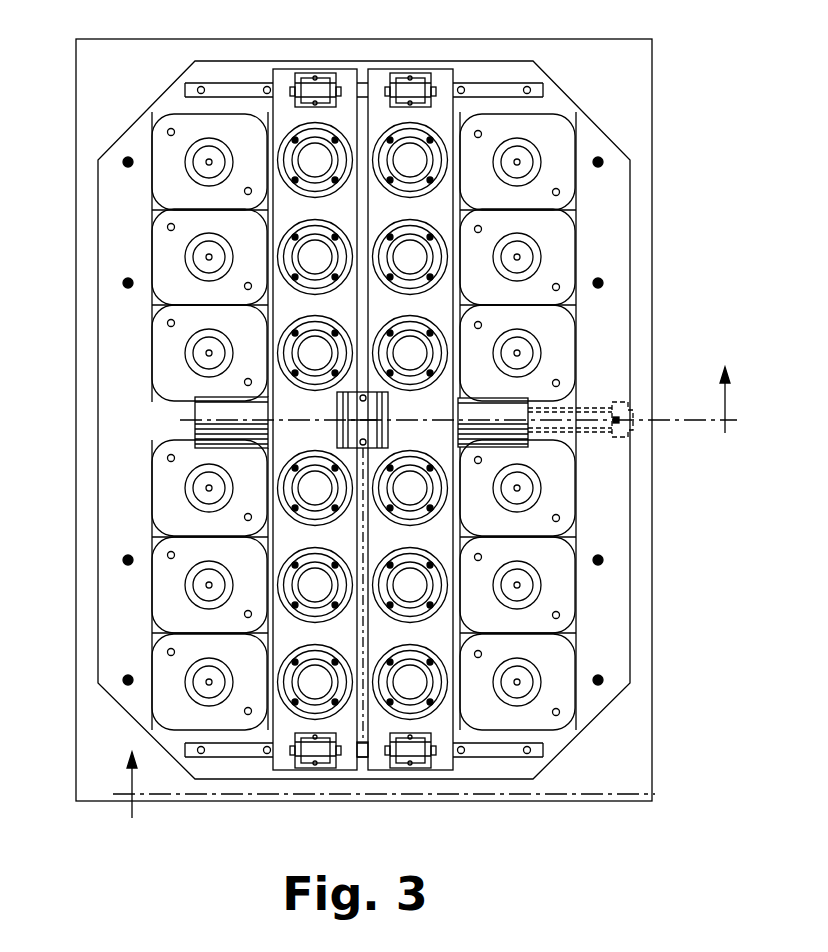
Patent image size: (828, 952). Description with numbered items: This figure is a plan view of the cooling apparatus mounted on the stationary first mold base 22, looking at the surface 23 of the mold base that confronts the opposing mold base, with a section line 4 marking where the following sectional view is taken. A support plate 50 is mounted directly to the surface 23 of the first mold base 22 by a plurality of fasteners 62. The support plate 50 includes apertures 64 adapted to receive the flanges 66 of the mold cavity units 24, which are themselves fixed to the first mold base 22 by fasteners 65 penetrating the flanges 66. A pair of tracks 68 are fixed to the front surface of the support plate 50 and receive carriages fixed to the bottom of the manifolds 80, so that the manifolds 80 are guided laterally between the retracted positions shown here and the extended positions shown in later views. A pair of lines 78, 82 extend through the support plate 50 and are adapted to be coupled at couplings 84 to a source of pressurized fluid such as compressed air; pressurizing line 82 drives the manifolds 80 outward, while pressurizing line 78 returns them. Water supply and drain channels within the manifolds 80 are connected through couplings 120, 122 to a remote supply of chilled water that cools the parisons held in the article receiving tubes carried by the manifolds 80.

The first mold base 22 is at (627, 748).
The surface 23 is at (93, 745).
The mold cavity units 24 is at (547, 227).
The support plate 50 is at (613, 653).
The fasteners 62 is at (128, 290).
The apertures 64 is at (155, 534).
The fasteners 65 is at (195, 432).
The flanges 66 is at (160, 248).
The tracks 68 is at (485, 88).
The line 78 is at (585, 436).
The manifolds 80 is at (430, 410).
The line 82 is at (593, 407).
The couplings 84 is at (627, 428).
The coupling 120 is at (333, 770).
The coupling 122 is at (298, 770).
The section line 4 is at (425, 607).